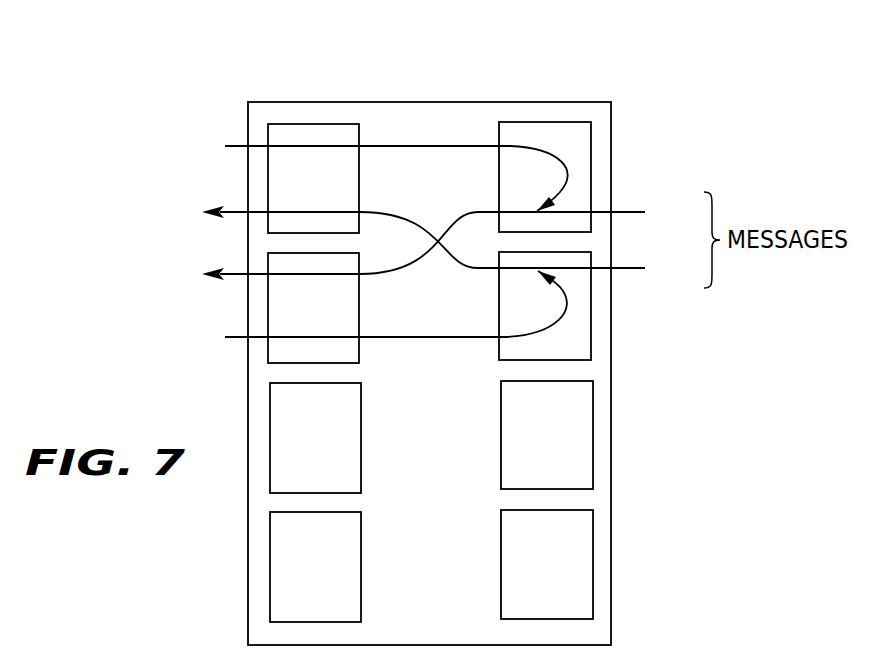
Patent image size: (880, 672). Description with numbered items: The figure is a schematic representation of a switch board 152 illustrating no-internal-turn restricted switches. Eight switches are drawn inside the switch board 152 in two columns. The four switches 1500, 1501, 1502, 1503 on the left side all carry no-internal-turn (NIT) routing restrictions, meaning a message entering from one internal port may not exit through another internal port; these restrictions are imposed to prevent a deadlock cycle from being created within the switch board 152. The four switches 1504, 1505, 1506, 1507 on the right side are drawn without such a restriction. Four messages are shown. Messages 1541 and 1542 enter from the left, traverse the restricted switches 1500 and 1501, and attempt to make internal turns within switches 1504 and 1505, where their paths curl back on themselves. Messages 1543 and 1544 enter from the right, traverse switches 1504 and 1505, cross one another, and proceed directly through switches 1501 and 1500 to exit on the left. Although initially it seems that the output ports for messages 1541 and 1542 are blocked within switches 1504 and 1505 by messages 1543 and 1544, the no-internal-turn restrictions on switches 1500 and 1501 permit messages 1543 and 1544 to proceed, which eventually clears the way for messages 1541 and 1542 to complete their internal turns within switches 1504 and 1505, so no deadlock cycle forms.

The switch board 152 is at (398, 95).
The switch 1500 is at (359, 141).
The switch 1501 is at (359, 307).
The switch 1502 is at (361, 445).
The switch 1503 is at (361, 573).
The switch 1504 is at (499, 184).
The switch 1505 is at (499, 281).
The switch 1506 is at (501, 393).
The switch 1507 is at (501, 527).
The message 1541 is at (370, 172).
The message 1542 is at (369, 312).
The message 1543 is at (450, 239).
The message 1544 is at (450, 248).